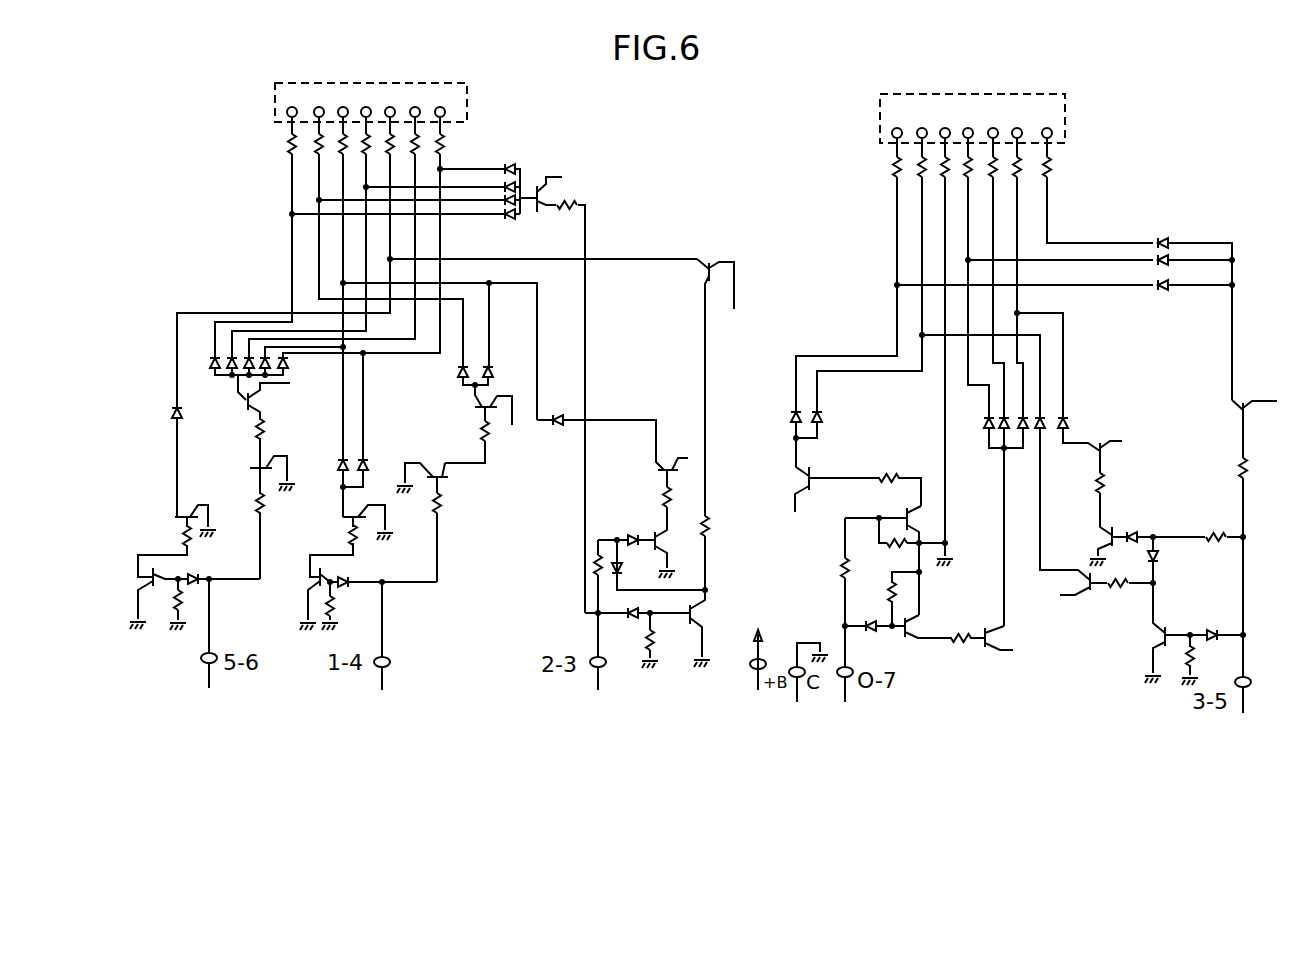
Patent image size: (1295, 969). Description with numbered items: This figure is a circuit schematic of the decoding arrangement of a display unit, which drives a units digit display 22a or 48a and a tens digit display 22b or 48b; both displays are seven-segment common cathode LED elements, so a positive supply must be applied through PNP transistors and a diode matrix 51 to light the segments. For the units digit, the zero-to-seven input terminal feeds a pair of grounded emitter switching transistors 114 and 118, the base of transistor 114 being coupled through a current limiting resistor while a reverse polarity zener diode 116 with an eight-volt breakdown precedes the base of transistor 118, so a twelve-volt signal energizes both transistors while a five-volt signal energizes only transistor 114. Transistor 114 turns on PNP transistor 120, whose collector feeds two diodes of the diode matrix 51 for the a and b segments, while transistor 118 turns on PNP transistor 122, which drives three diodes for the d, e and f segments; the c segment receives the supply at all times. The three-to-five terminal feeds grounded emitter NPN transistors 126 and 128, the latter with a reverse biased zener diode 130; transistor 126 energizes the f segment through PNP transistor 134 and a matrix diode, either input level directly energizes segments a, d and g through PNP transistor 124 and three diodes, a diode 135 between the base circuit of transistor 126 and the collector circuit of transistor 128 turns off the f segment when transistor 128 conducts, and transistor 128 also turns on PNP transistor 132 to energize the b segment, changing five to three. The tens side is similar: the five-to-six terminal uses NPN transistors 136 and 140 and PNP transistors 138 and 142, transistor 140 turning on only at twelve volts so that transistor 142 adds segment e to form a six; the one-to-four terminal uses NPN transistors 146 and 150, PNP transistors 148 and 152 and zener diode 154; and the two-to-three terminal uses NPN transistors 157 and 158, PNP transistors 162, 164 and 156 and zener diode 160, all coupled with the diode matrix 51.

The tens digit display 22b is at (467, 103).
The tens digit display 48b is at (439, 104).
The units digit display 22a is at (1065, 116).
The units digit display 48a is at (1009, 126).
The diode matrix 51 is at (500, 232).
The PNP switching transistor 156 is at (543, 212).
The PNP switching transistor 162 is at (711, 265).
The PNP switching transistor 164 is at (660, 446).
The NPN switching transistor 157 is at (664, 535).
The NPN switching transistor 158 is at (698, 614).
The zener diode 160 is at (632, 622).
The PNP switching transistor 138 is at (252, 393).
The NPN switching transistor 136 is at (262, 460).
The PNP switching transistor 142 is at (186, 505).
The NPN switching transistor 140 is at (165, 571).
The PNP switching transistor 152 is at (362, 522).
The NPN switching transistor 150 is at (312, 582).
The zener diode 154 is at (342, 590).
The NPN switching transistor 146 is at (449, 472).
The PNP switching transistor 148 is at (494, 415).
The PNP transistor 124 is at (1243, 400).
The PNP transistor 134 is at (1104, 437).
The NPN switching transistor 126 is at (1110, 524).
The diode 135 is at (1163, 553).
The PNP transistor 132 is at (1090, 594).
The NPN switching transistor 128 is at (1160, 624).
The zener diode 130 is at (1214, 630).
The PNP transistor 120 is at (814, 470).
The NPN switching transistor 114 is at (919, 516).
The zener diode 116 is at (874, 633).
The NPN switching transistor 118 is at (919, 622).
The PNP transistor 122 is at (985, 648).